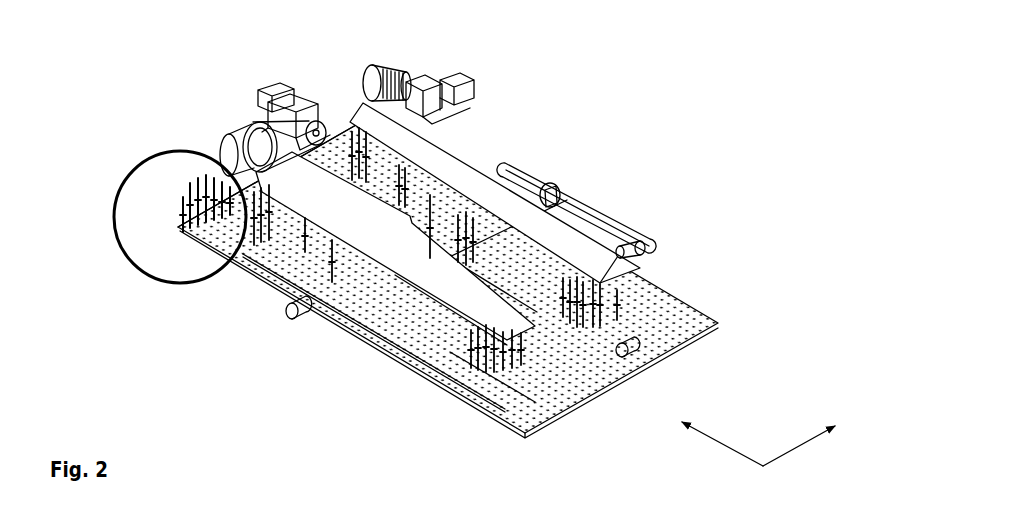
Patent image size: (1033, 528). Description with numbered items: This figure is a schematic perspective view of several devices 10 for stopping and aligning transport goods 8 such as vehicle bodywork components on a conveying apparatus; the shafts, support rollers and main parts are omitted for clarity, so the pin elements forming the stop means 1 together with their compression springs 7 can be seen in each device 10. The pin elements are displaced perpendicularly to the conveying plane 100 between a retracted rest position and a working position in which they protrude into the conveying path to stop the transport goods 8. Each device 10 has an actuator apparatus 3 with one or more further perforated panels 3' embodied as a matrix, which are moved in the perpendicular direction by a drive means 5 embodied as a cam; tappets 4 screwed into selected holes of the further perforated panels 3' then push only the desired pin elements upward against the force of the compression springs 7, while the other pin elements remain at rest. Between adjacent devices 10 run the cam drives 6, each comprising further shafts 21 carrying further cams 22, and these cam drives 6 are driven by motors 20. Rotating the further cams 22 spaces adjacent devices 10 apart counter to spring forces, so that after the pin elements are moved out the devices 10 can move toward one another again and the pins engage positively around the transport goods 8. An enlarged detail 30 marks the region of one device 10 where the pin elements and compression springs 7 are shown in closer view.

The stop means 1 is at (245, 265).
The actuator apparatus 3 is at (448, 275).
The further perforated panel 3' is at (449, 367).
The tappet 4 is at (307, 267).
The drive means 5 is at (293, 304).
The cam drive 6 is at (293, 313).
The compression spring 7 is at (305, 232).
The transport goods 8 is at (472, 315).
The device 10 is at (480, 389).
The motor 20 is at (373, 70).
The further shaft 21 is at (443, 355).
The further cam 22 is at (607, 353).
The enlarged detail 30 is at (137, 166).
The conveying plane 100 is at (758, 444).